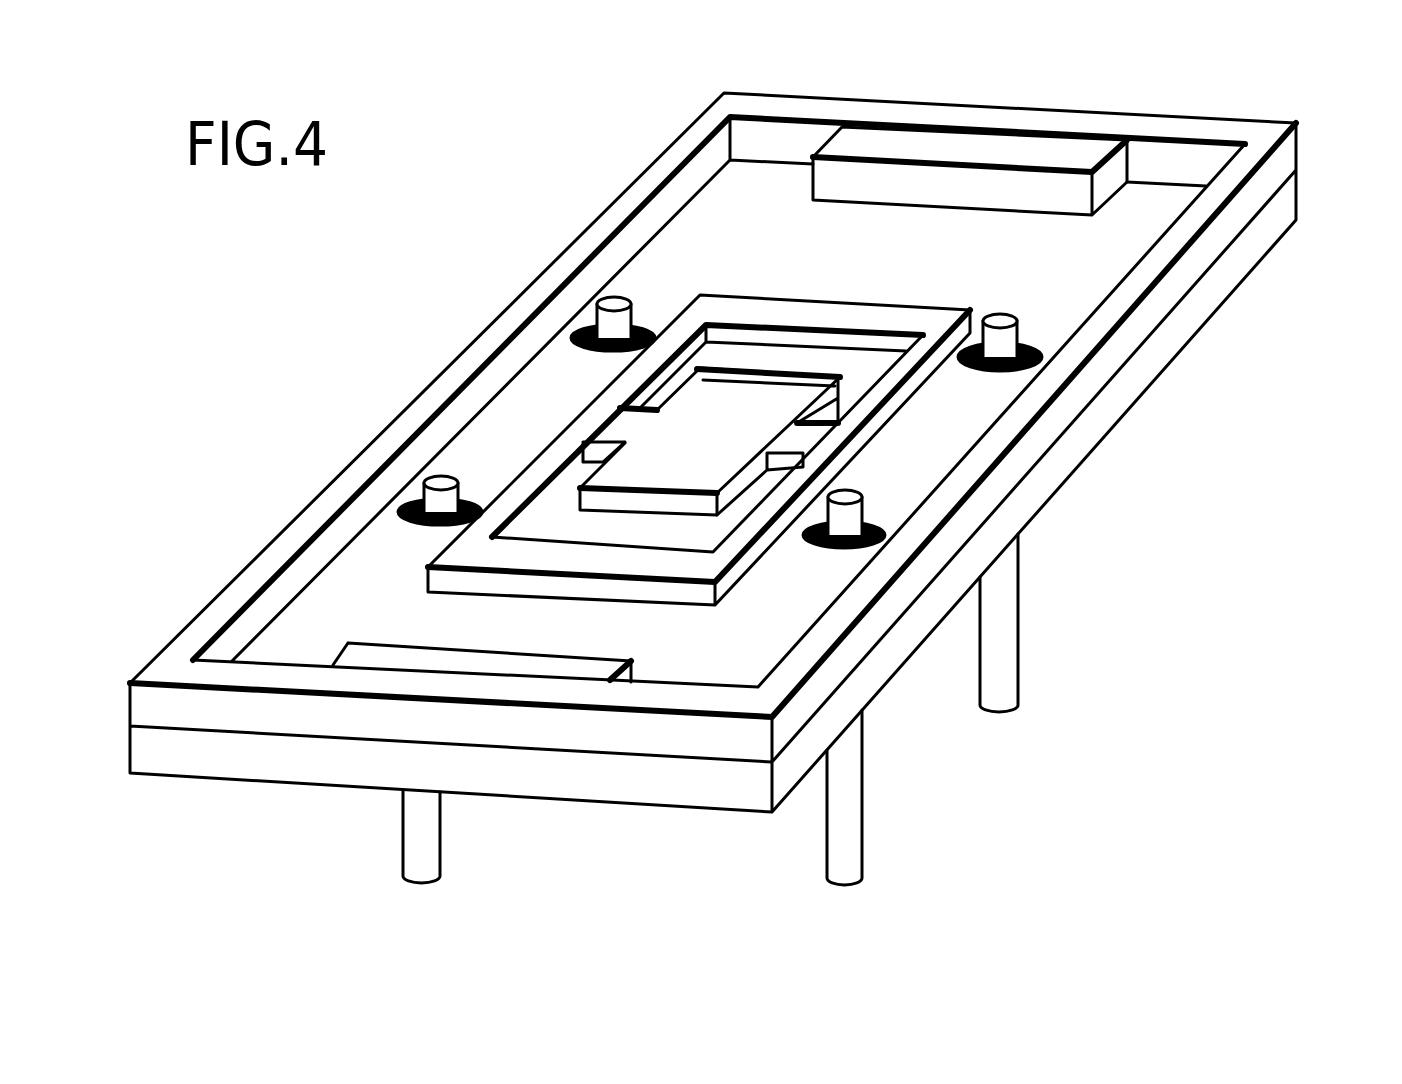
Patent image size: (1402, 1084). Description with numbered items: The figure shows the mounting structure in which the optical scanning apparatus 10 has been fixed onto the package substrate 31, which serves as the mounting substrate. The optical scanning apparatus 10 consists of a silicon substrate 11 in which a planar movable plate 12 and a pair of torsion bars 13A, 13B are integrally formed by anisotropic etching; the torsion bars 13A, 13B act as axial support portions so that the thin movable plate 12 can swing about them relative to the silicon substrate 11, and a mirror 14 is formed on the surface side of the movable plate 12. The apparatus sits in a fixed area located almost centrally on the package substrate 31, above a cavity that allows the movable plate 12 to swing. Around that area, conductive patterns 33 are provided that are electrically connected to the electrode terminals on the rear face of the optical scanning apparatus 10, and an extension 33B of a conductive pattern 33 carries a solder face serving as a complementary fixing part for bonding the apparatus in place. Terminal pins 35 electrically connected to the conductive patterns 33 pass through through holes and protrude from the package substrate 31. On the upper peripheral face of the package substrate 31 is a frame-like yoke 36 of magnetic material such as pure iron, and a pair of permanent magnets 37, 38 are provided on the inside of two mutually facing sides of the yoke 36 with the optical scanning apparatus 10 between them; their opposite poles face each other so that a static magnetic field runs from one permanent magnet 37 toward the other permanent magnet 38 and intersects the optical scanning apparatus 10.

The optical scanning apparatus 10 is at (754, 561).
The silicon substrate 11 is at (907, 314).
The movable plate 12 is at (672, 505).
The torsion bar 13A is at (620, 426).
The torsion bar 13B is at (806, 437).
The mirror 14 is at (716, 410).
The package substrate 31 is at (1206, 332).
The conductive pattern 33 is at (754, 476).
The extension of conductive pattern 33B is at (953, 362).
The terminal pin 35 is at (1000, 663).
The yoke 36 is at (1221, 118).
The permanent magnet 37 is at (357, 655).
The permanent magnet 38 is at (966, 150).